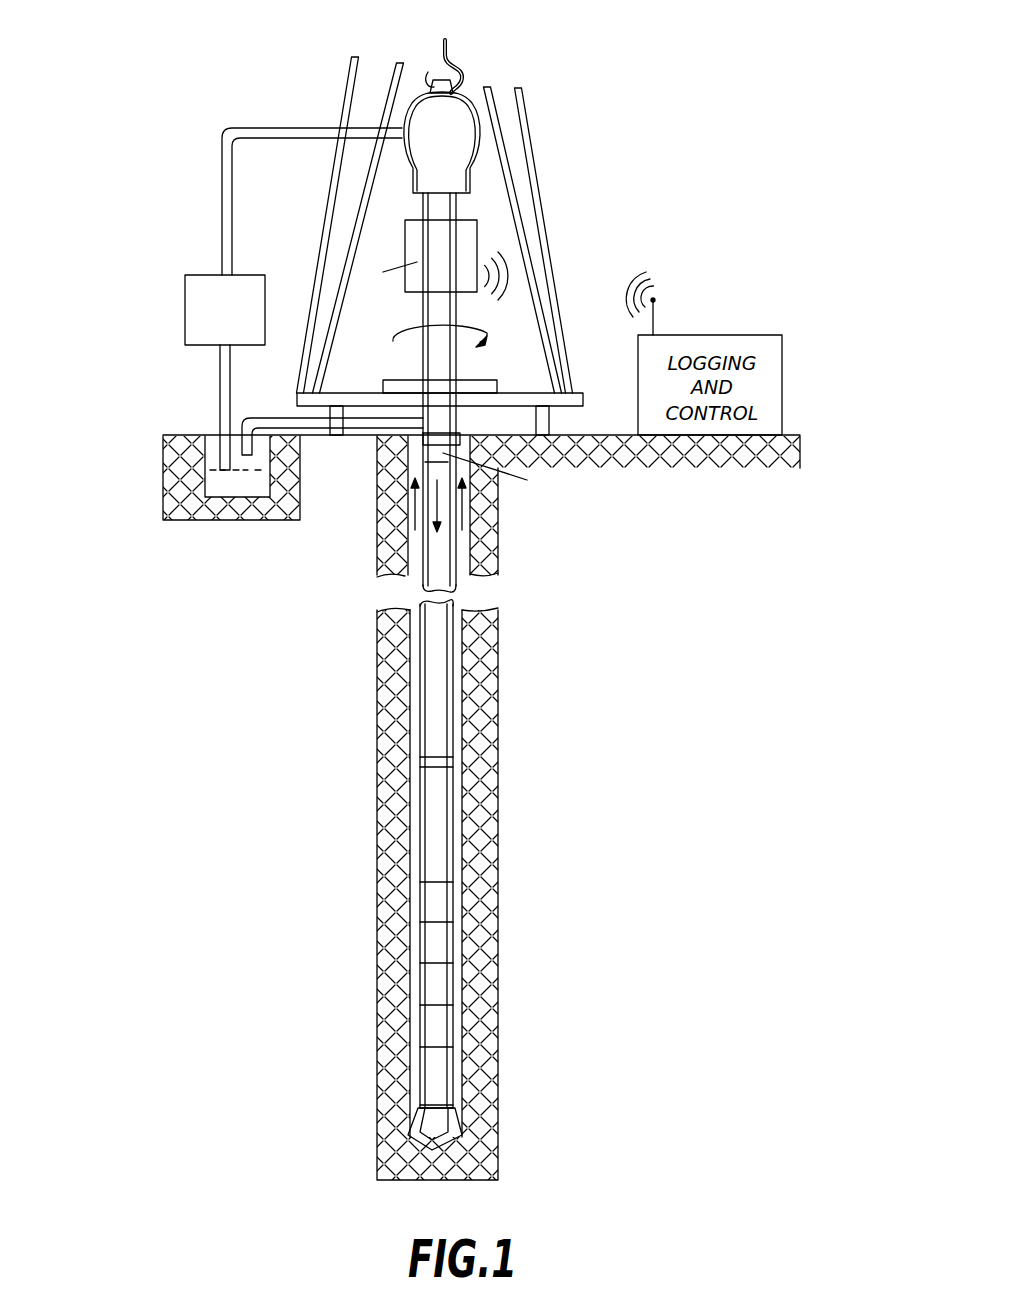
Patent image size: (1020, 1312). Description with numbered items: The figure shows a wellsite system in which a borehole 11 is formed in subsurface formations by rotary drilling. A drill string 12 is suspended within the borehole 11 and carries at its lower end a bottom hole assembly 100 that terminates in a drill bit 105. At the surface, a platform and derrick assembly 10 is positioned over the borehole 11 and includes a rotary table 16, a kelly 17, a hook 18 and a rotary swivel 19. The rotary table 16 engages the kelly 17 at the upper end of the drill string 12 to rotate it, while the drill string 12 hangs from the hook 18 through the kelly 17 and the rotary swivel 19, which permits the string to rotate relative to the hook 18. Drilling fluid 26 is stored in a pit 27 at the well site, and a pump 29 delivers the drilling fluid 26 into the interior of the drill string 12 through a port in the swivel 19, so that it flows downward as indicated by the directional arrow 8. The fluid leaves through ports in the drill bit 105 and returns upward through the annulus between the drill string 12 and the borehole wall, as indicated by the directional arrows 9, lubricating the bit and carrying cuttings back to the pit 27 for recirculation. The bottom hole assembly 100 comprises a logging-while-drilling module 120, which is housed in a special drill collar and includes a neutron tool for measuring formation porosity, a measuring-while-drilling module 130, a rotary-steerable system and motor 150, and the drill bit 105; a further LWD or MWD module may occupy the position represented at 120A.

The platform and derrick assembly 10 is at (556, 131).
The hook 18 is at (441, 43).
The rotary swivel 19 is at (428, 177).
The kelly 17 is at (433, 367).
The rotary table 16 is at (477, 383).
The borehole 11 is at (471, 430).
The drill string 12 is at (436, 429).
The pump 29 is at (202, 345).
The pit 27 is at (210, 429).
The drilling fluid 26 is at (240, 490).
The directional arrows 9 is at (414, 510).
The directional arrow 8 is at (436, 513).
The bottom hole assembly 100 is at (343, 1162).
The logging-while-drilling module 120 is at (440, 943).
The measuring-while-drilling module 130 is at (442, 988).
The additional LWD or MWD module 120A is at (442, 1030).
The rotary-steerable system and motor 150 is at (440, 1072).
The drill bit 105 is at (438, 1120).